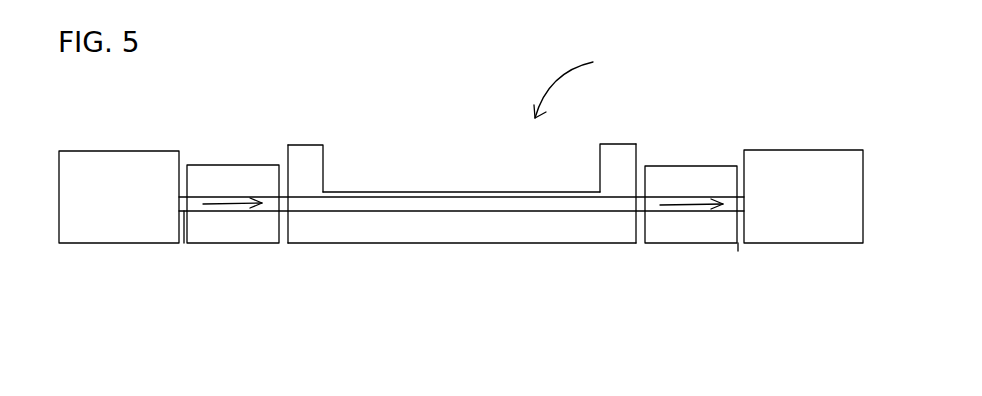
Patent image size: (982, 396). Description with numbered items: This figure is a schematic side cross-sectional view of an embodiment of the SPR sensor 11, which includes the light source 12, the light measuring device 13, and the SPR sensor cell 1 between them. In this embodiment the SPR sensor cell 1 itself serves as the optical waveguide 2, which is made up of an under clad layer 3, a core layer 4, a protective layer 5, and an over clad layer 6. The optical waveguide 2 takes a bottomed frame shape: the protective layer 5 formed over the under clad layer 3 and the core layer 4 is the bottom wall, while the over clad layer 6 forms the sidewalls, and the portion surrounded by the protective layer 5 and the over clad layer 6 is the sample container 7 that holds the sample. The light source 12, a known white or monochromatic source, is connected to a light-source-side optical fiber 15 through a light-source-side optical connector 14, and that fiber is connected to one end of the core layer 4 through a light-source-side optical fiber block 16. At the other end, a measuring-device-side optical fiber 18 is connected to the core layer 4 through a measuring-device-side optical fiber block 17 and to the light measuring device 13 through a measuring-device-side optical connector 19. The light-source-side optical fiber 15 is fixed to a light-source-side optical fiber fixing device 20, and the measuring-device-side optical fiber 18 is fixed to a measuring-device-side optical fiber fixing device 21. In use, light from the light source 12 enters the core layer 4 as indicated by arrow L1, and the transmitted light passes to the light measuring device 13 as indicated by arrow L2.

The SPR sensor cell 1 is at (461, 214).
The optical waveguide 2 is at (460, 244).
The under clad layer 3 is at (355, 233).
The core layer 4 is at (323, 208).
The protective layer 5 is at (337, 192).
The over clad layer 6 is at (617, 143).
The sample container 7 is at (576, 79).
The SPR sensor 11 is at (453, 370).
The light source 12 is at (111, 162).
The light measuring device 13 is at (817, 177).
The light-source-side optical connector 14 is at (184, 243).
The light-source-side optical fiber 15 is at (262, 196).
The light-source-side optical fiber block 16 is at (279, 192).
The measuring-device-side optical fiber block 17 is at (643, 192).
The measuring-device-side optical fiber 18 is at (725, 197).
The measuring-device-side optical connector 19 is at (738, 250).
The light-source-side optical fiber fixing device 20 is at (258, 233).
The measuring-device-side optical fiber fixing device 21 is at (655, 228).
The arrow L1 is at (228, 206).
The arrow L2 is at (685, 212).